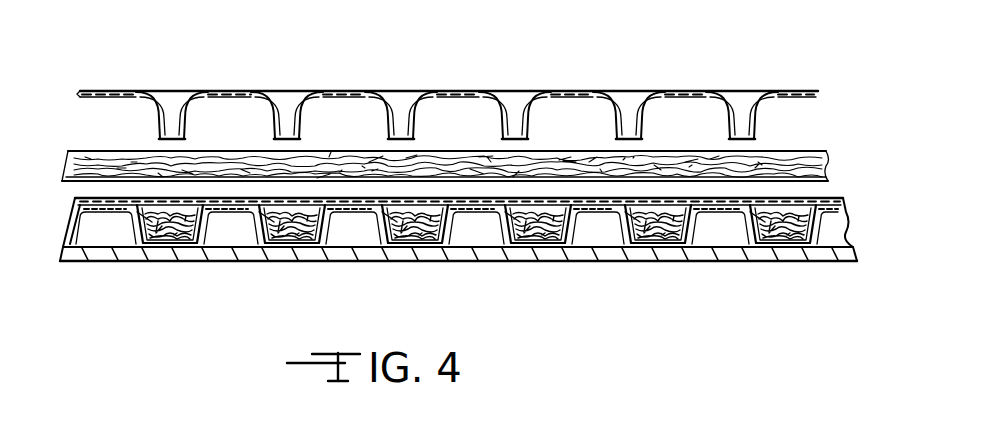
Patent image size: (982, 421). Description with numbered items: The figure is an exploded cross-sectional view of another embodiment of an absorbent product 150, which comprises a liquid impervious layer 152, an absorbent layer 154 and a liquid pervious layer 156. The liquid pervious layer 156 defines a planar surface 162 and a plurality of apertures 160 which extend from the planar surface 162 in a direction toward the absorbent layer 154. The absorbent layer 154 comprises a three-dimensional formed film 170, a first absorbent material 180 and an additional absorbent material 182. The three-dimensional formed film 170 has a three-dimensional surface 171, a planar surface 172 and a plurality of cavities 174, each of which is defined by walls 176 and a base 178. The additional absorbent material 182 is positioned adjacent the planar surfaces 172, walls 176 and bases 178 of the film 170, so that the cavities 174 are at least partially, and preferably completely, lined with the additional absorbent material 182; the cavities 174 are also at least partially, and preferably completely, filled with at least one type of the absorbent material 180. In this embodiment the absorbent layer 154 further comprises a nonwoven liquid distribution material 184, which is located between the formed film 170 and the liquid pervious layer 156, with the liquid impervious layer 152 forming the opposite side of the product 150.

The absorbent product 150 is at (122, 78).
The liquid impervious layer 152 is at (117, 270).
The absorbent layer 154 is at (58, 206).
The liquid pervious layer 156 is at (143, 80).
The apertures 160 is at (290, 106).
The planar surface 162 is at (352, 93).
The three-dimensional formed film 170 is at (237, 238).
The three-dimensional surface 171 is at (340, 232).
The planar surface 172 is at (368, 216).
The cavities 174 is at (428, 202).
The walls 176 is at (572, 228).
The base 178 is at (534, 226).
The first absorbent material 180 is at (785, 250).
The additional absorbent material 182 is at (699, 218).
The nonwoven liquid distribution material 184 is at (798, 145).